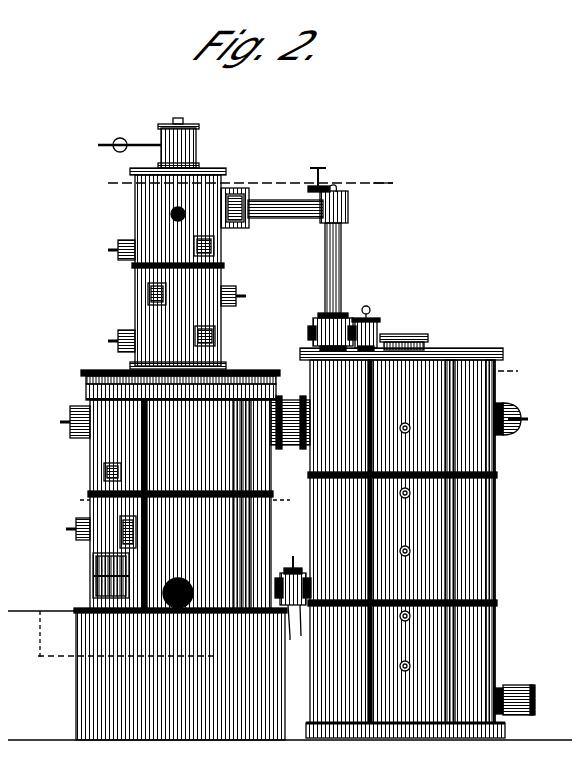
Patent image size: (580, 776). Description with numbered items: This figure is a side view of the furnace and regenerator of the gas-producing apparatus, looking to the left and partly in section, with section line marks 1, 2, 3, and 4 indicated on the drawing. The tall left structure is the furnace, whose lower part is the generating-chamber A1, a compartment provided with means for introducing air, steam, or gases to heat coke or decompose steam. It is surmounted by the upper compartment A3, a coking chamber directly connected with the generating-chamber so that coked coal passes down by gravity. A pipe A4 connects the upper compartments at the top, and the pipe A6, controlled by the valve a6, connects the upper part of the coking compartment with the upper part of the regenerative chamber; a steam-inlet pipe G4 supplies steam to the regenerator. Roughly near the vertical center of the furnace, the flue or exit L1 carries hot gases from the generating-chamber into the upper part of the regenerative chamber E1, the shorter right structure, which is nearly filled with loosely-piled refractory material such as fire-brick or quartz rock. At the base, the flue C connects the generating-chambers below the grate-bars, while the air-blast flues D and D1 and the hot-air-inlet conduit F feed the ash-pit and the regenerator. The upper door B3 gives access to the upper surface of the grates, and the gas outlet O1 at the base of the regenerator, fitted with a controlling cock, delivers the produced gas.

The upper compartment A3 is at (200, 270).
The pipe A4 is at (163, 207).
The pipe A6 is at (333, 258).
The valve a6 is at (362, 308).
The steam-inlet pipe G4 is at (322, 176).
The section line 3 is at (243, 183).
The section line 4 is at (387, 185).
The section line 2 is at (513, 372).
The section line 1 is at (176, 500).
The regenerative chamber E1 is at (487, 452).
The gas outlet O1 is at (515, 689).
The generating-chamber A1 is at (82, 450).
The upper door B3 is at (92, 575).
The flue C is at (180, 659).
The flue or exit L1 is at (290, 413).
The air-blast flue D1 is at (292, 570).
The hot-air-inlet conduit F is at (296, 600).
The air-blast flue D is at (288, 640).